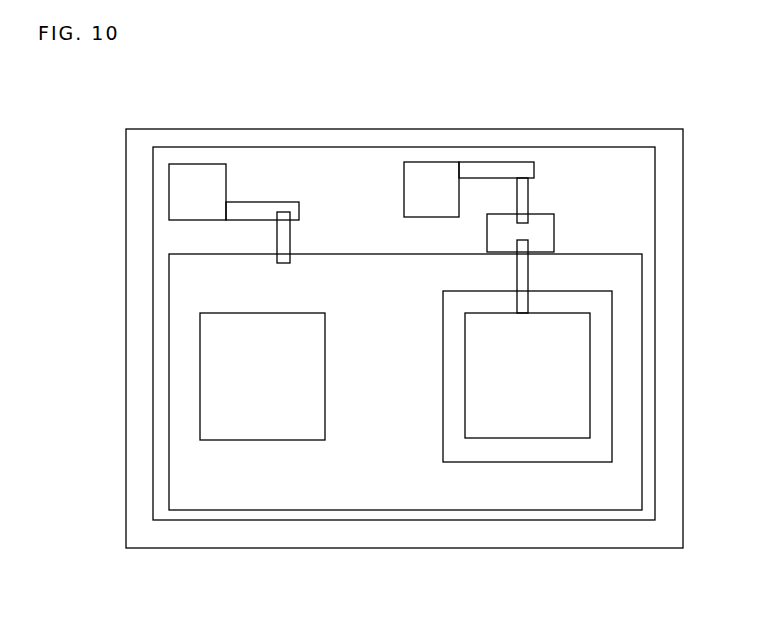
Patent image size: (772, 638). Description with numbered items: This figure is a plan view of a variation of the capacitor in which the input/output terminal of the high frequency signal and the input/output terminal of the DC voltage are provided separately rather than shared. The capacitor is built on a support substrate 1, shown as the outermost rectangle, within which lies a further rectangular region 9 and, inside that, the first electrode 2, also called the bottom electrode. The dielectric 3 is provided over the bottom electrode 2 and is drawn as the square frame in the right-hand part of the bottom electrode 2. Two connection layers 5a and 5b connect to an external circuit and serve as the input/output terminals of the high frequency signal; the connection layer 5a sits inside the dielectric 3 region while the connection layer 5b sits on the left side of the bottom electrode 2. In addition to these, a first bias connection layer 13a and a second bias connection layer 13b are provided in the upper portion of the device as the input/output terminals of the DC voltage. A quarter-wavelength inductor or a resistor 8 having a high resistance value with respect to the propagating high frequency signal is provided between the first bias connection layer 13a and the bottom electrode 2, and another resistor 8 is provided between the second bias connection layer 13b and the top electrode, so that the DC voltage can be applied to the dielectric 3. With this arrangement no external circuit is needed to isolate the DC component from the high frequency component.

The support substrate 1 is at (147, 515).
The first electrode 2 is at (582, 473).
The dielectric 3 is at (600, 427).
The connection layer 5a is at (552, 353).
The connection layer 5b is at (218, 345).
The resistor 8 is at (297, 215).
The sealing frame 9 is at (562, 515).
The first bias connection layer 13a is at (207, 167).
The second bias connection layer 13b is at (423, 162).